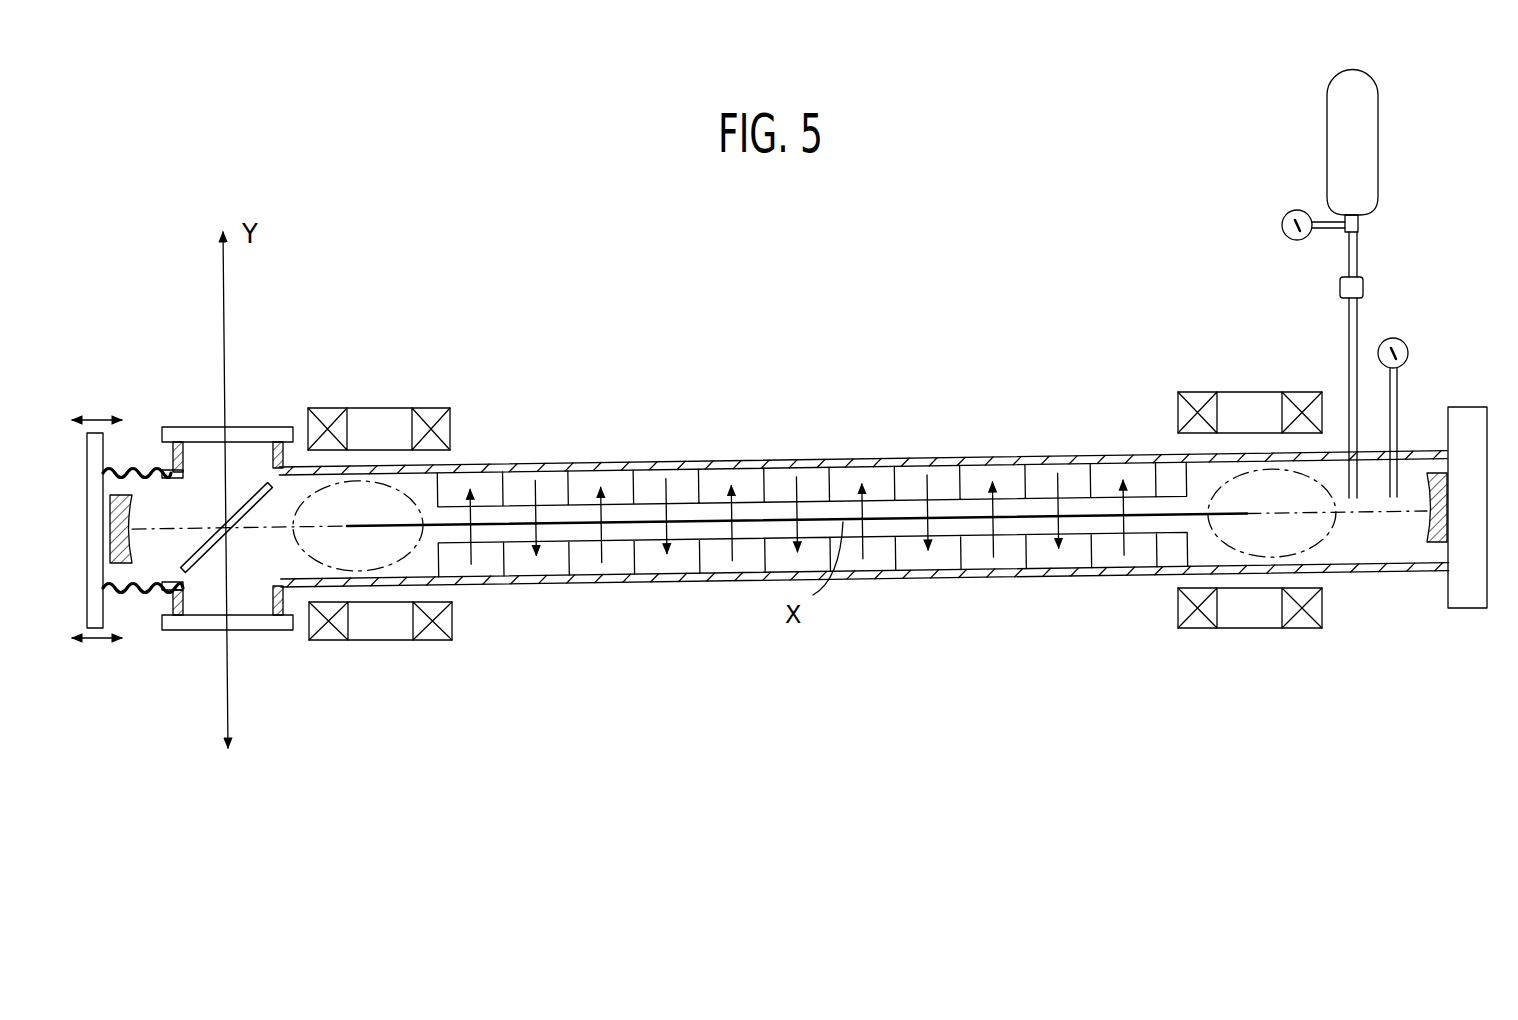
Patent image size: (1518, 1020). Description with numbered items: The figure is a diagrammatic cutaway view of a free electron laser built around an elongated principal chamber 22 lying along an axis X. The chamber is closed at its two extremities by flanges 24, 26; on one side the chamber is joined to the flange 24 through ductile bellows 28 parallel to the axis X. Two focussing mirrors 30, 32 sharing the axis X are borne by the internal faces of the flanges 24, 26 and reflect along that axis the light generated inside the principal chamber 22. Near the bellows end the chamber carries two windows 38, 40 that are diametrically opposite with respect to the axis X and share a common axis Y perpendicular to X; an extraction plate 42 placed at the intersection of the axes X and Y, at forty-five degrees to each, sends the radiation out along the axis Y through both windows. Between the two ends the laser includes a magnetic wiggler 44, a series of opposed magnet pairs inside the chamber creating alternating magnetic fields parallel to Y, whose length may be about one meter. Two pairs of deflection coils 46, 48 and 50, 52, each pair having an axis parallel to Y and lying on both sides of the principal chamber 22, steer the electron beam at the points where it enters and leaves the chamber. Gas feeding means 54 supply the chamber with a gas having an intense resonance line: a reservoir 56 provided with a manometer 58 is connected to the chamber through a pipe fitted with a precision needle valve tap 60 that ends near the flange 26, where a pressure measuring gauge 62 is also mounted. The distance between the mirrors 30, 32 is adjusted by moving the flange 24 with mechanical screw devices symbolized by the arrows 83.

The principal chamber 22 is at (665, 430).
The flange 24 is at (97, 447).
The flange 26 is at (1468, 598).
The ductile bellows 28 is at (145, 600).
The focussing mirror 30 is at (132, 510).
The focussing mirror 32 is at (1425, 530).
The window 38 is at (257, 437).
The window 40 is at (213, 630).
The extraction plate 42 is at (258, 515).
The magnetic wiggler 44 is at (687, 557).
The deflection coil 46 is at (438, 645).
The deflection coil 48 is at (430, 417).
The deflection coil 50 is at (1205, 628).
The deflection coil 52 is at (1196, 392).
The gas feeding means 54 is at (1266, 146).
The reservoir 56 is at (1338, 108).
The manometer 58 is at (1308, 212).
The precision needle valve tap 60 is at (1334, 290).
The pressure measuring gauge 62 is at (1406, 345).
The arrows 83 is at (93, 418).